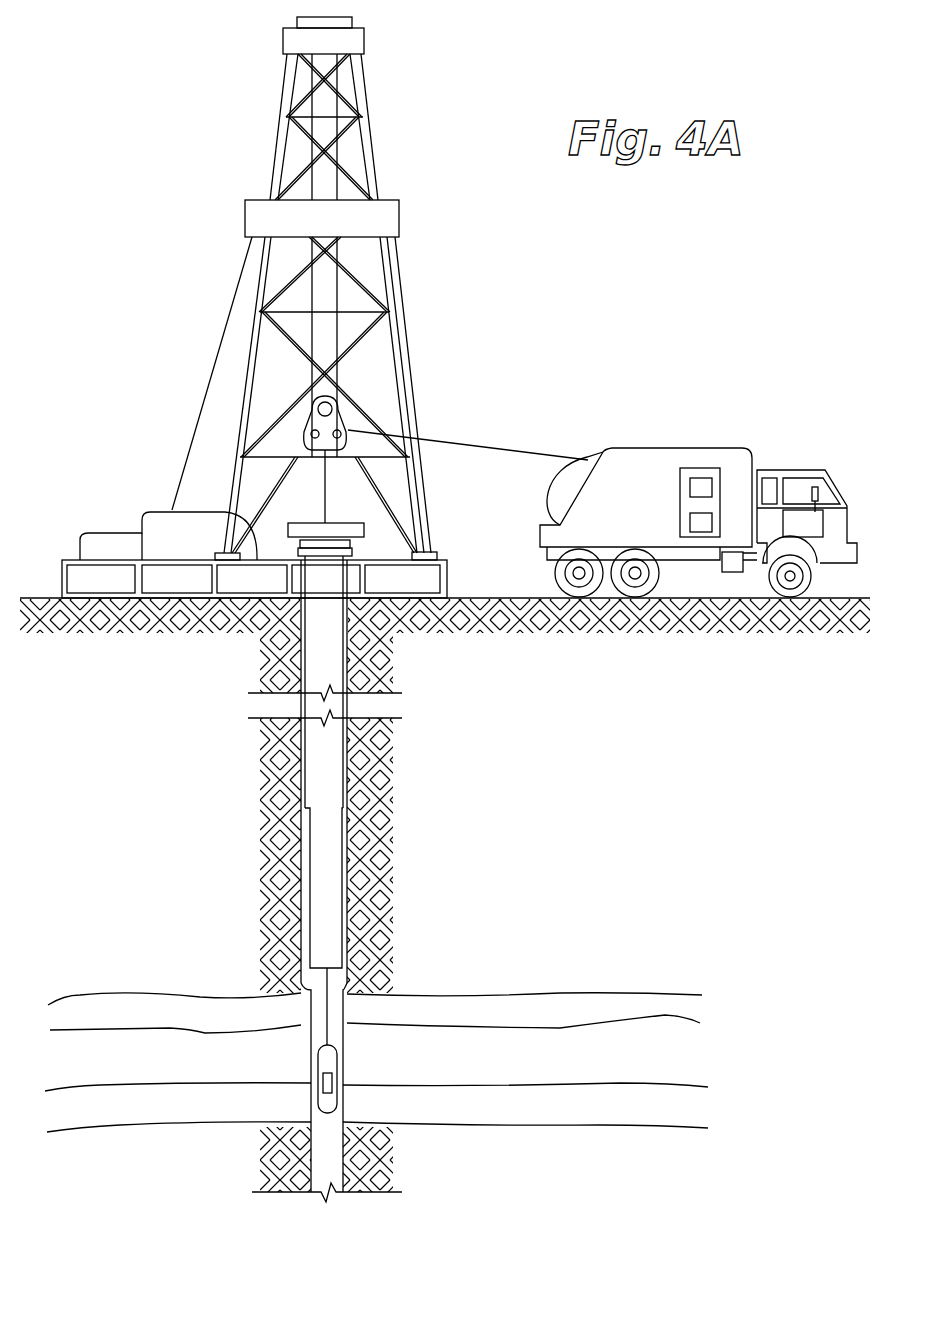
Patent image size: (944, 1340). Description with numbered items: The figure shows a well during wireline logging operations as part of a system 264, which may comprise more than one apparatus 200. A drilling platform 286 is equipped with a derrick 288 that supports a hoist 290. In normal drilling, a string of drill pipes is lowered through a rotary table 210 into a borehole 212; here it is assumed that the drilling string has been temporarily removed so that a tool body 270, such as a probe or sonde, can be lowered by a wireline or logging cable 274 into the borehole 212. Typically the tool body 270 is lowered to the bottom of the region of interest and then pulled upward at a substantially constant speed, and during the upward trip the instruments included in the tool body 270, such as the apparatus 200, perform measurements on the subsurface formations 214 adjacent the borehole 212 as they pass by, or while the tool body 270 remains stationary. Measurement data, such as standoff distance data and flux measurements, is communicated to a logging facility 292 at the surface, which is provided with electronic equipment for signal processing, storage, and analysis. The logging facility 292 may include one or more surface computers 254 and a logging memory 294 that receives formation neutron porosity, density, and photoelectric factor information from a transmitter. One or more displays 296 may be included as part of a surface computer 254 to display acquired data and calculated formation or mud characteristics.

The system 264 is at (553, 293).
The hoist 290 is at (340, 413).
The wireline or logging cable 274 is at (517, 453).
The rotary table 210 is at (360, 528).
The derrick 288 is at (438, 544).
The drilling platform 286 is at (446, 573).
The logging facility 292 is at (657, 448).
The display 296 is at (690, 484).
The surface computer 254 is at (680, 501).
The logging memory 294 is at (690, 524).
The borehole 212 is at (301, 1013).
The tool body 270 is at (337, 1055).
The apparatus 200 is at (333, 1082).
The subsurface formations 214 is at (715, 978).